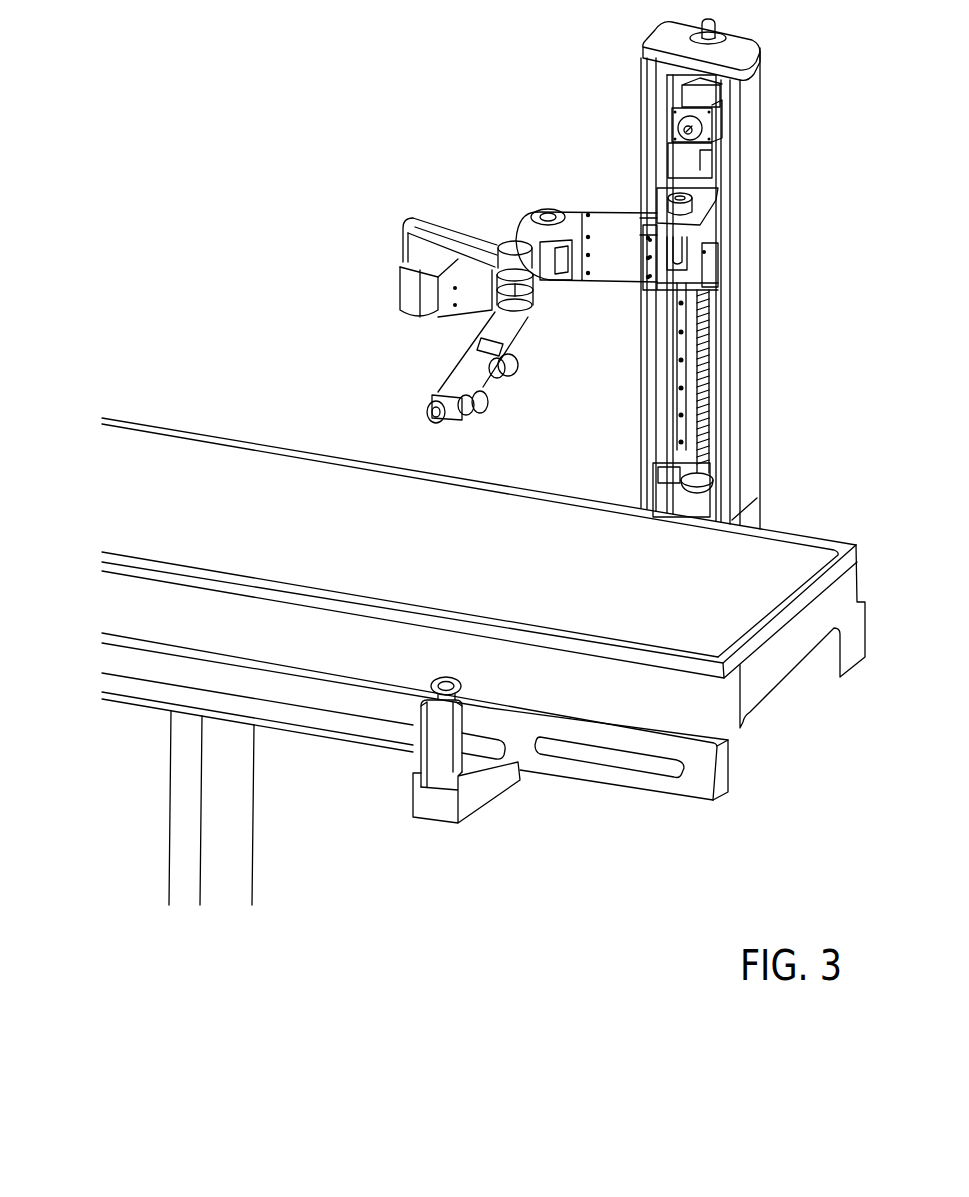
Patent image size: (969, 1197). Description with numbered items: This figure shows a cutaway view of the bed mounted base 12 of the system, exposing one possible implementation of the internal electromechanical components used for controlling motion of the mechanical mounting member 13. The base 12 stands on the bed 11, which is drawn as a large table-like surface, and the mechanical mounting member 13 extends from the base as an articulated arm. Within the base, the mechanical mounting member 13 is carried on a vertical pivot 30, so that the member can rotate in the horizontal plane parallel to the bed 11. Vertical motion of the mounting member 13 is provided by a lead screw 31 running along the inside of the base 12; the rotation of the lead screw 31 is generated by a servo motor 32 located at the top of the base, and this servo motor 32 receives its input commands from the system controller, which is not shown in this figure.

The bed 11 is at (807, 548).
The bed mounted base 12 is at (760, 400).
The mechanical mounting member 13 is at (603, 218).
The vertical pivot 30 is at (683, 248).
The lead screw 31 is at (708, 325).
The servo motor 32 is at (715, 125).